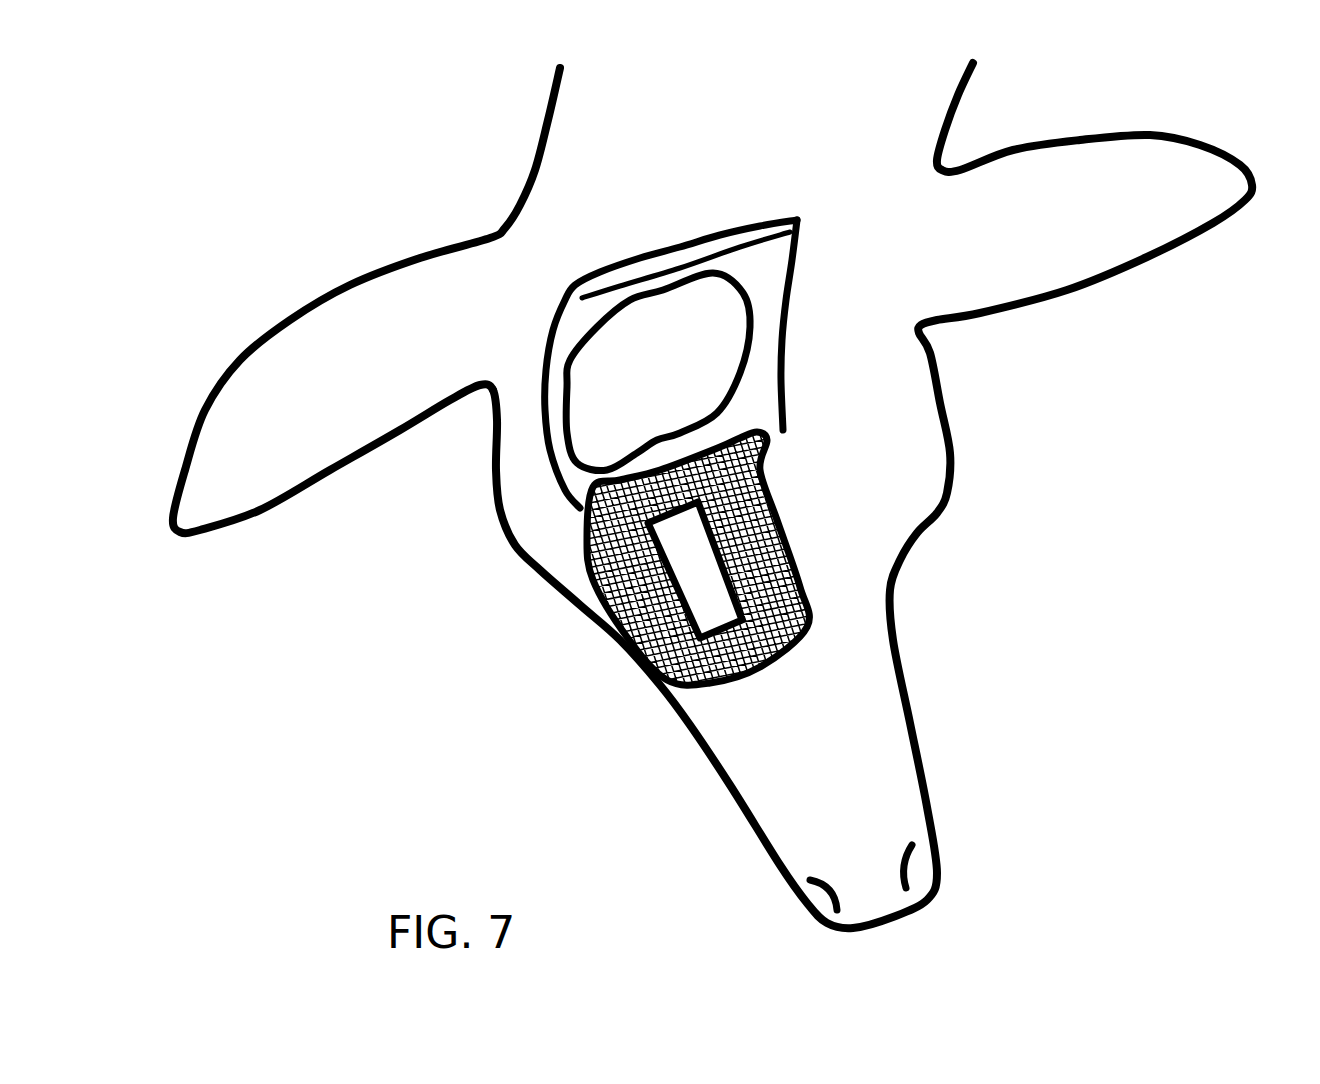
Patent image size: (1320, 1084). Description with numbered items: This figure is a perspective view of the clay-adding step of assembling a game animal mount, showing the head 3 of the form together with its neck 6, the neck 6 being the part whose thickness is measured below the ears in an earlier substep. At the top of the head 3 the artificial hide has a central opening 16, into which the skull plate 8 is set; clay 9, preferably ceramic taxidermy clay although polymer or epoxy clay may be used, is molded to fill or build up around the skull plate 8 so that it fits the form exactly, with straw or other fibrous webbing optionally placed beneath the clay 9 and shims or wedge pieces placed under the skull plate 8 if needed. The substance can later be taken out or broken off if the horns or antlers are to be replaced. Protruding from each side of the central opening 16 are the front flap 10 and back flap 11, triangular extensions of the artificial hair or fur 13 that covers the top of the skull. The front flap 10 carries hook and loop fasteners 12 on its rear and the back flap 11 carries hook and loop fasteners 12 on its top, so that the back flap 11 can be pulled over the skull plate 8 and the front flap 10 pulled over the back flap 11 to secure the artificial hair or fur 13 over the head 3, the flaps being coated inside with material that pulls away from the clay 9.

The head 3 is at (962, 465).
The neck 6 is at (532, 148).
The skull plate 8 is at (878, 363).
The clay 9 is at (607, 397).
The front flap 10 is at (630, 608).
The back flap 11 is at (753, 200).
The hook and loop fasteners 12 is at (693, 603).
The artificial hair or fur 13 is at (780, 143).
The central opening 16 is at (808, 308).